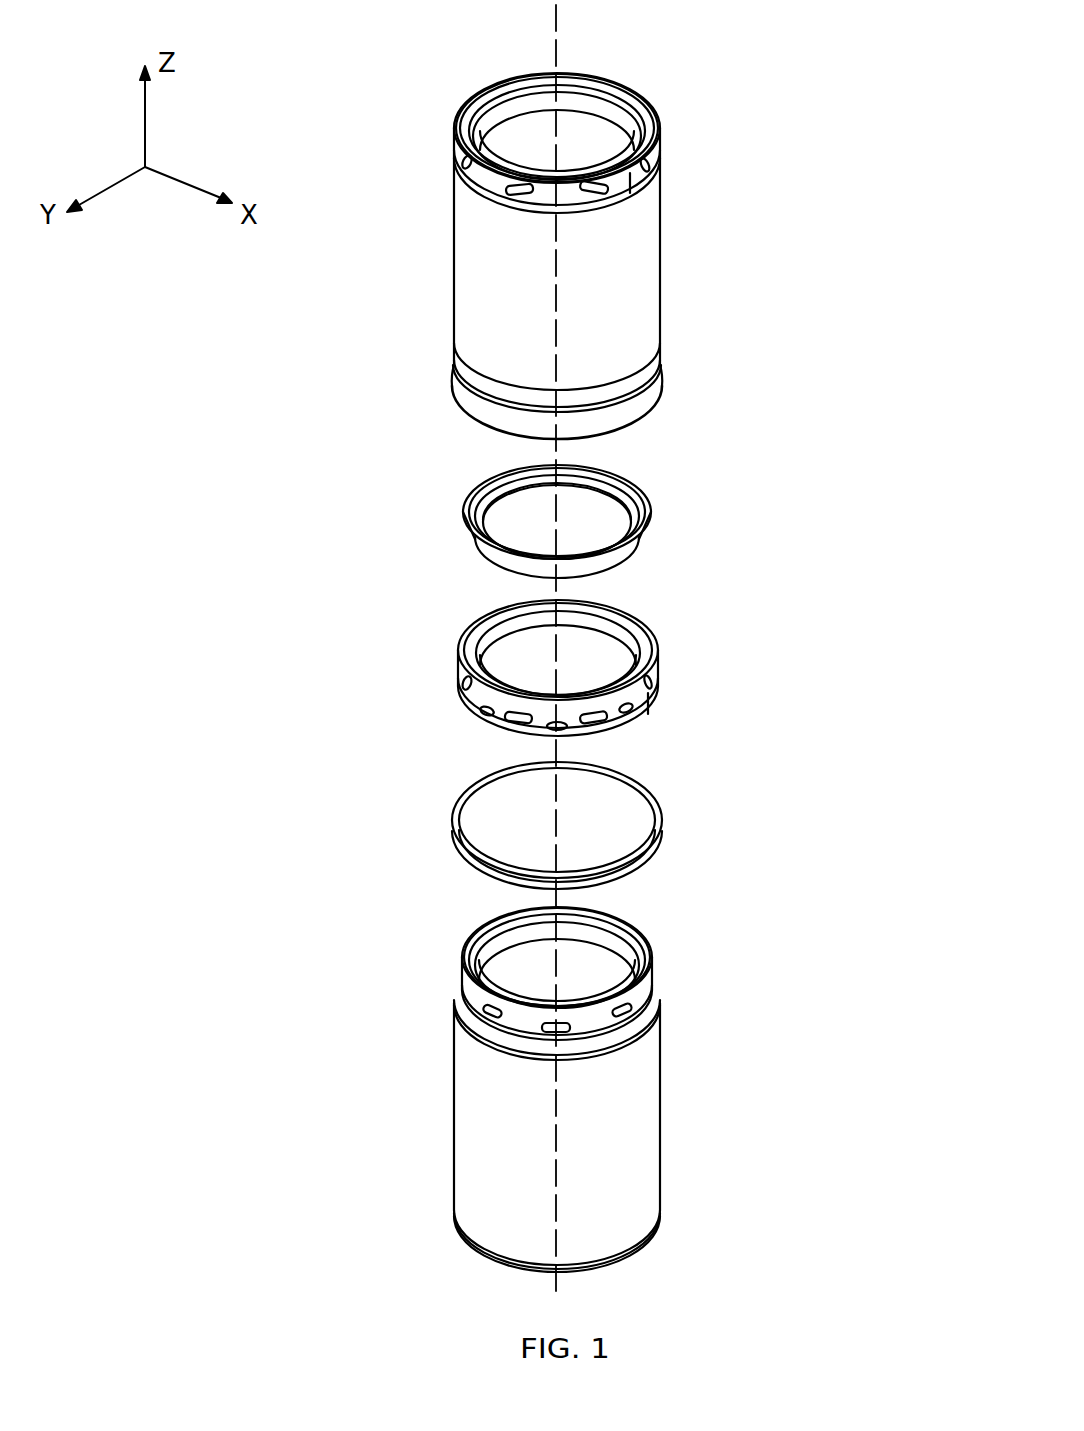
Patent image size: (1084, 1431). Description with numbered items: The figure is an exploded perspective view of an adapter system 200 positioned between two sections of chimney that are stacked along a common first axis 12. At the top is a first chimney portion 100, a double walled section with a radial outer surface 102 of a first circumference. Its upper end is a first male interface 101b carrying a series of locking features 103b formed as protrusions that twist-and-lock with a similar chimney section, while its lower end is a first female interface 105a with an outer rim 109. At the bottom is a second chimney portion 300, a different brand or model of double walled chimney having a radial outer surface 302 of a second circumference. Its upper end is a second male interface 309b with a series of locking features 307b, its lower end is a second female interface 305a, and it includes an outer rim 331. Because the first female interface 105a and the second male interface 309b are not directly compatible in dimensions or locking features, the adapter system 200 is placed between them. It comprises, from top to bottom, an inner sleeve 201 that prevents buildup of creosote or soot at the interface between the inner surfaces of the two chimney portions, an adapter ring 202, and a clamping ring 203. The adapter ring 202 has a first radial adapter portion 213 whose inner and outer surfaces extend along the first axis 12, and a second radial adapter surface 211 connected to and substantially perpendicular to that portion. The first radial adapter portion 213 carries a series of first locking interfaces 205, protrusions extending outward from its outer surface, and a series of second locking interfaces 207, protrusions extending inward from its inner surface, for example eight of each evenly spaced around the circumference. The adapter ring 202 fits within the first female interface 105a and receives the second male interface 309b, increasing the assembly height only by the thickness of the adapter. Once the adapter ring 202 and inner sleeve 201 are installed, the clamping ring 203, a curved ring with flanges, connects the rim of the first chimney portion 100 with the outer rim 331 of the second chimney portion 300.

The first axis 12 is at (556, 42).
The first chimney portion 100 is at (605, 256).
The first male interface 101b is at (648, 110).
The locking features 103b is at (662, 152).
The radial outer surface 102 is at (476, 258).
The outer rim 109 is at (460, 385).
The first female interface 105a is at (463, 408).
The adapter system 200 is at (649, 677).
The inner sleeve 201 is at (690, 513).
The adapter ring 202 is at (588, 690).
The second radial adapter surface 211 is at (473, 653).
The first locking interfaces 205 is at (483, 687).
The second locking interfaces 207 is at (490, 715).
The first radial adapter portion 213 is at (640, 697).
The clamping ring 203 is at (645, 825).
The second chimney portion 300 is at (613, 1086).
The second male interface 309b is at (507, 935).
The locking features 307b is at (483, 1007).
The outer rim 331 is at (655, 1010).
The radial outer surface 302 is at (476, 1133).
The second female interface 305a is at (468, 1240).